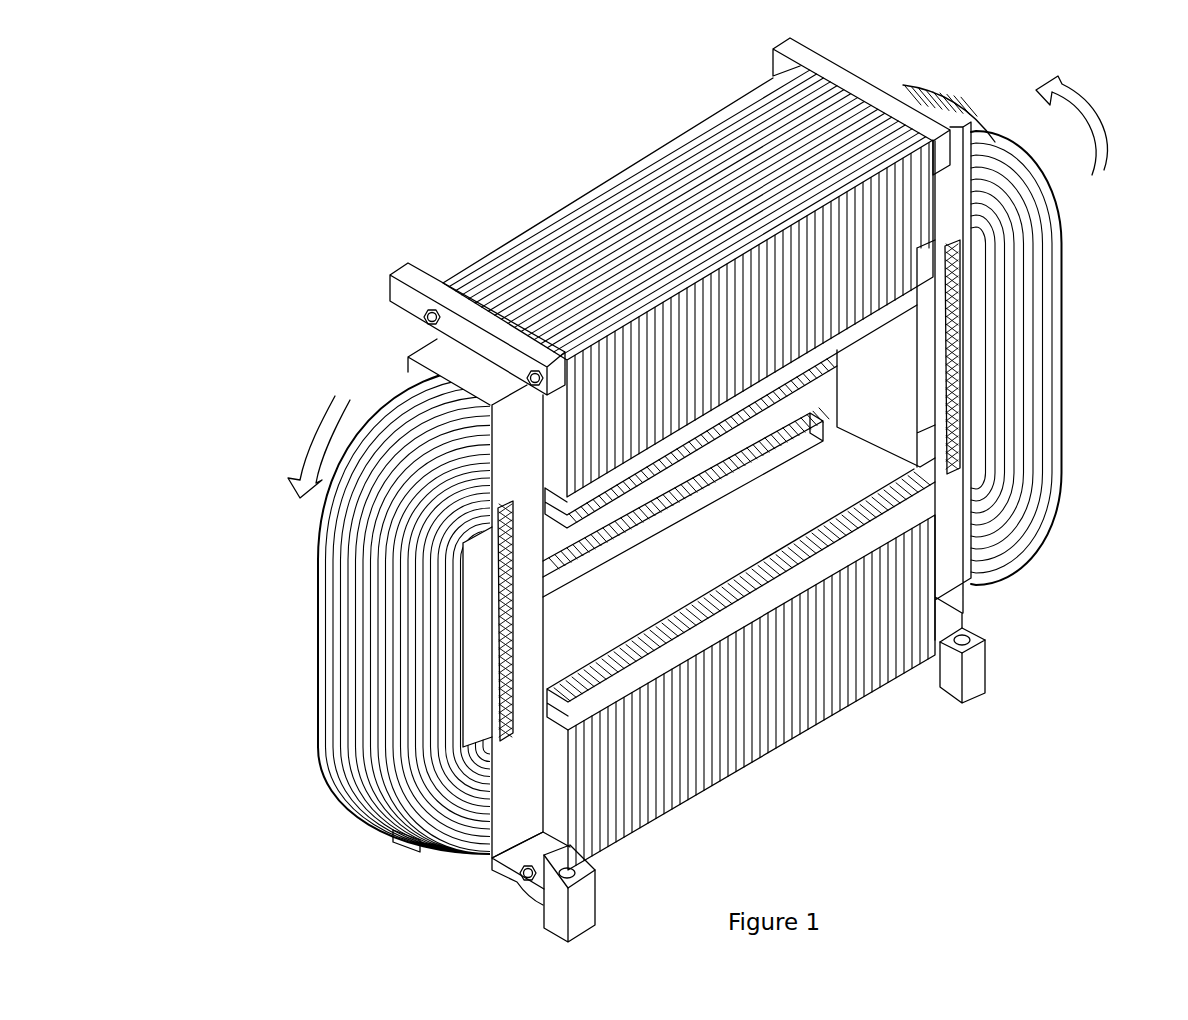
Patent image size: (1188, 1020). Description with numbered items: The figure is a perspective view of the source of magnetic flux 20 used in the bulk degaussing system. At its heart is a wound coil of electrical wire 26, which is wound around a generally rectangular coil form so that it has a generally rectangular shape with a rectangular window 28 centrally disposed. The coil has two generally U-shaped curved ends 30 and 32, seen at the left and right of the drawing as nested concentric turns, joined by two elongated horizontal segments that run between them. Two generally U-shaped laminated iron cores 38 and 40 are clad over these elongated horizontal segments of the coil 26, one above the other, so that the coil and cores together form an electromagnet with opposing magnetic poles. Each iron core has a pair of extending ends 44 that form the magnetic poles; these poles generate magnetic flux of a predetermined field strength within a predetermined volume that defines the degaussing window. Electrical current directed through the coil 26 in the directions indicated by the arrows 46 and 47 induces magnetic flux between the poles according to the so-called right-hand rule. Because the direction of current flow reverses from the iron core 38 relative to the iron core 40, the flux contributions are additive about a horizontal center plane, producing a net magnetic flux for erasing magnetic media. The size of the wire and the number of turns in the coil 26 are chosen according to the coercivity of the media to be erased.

The source of magnetic flux 20 is at (522, 189).
The wound coil of electrical wire 26 is at (1038, 378).
The rectangular window 28 is at (704, 470).
The U-shaped curved end 30 is at (302, 690).
The U-shaped curved end 32 is at (1078, 310).
The laminated iron core 38 is at (875, 233).
The laminated iron core 40 is at (905, 568).
The extending ends 44 is at (645, 480).
The arrow 46 is at (1086, 126).
The arrow 47 is at (300, 437).